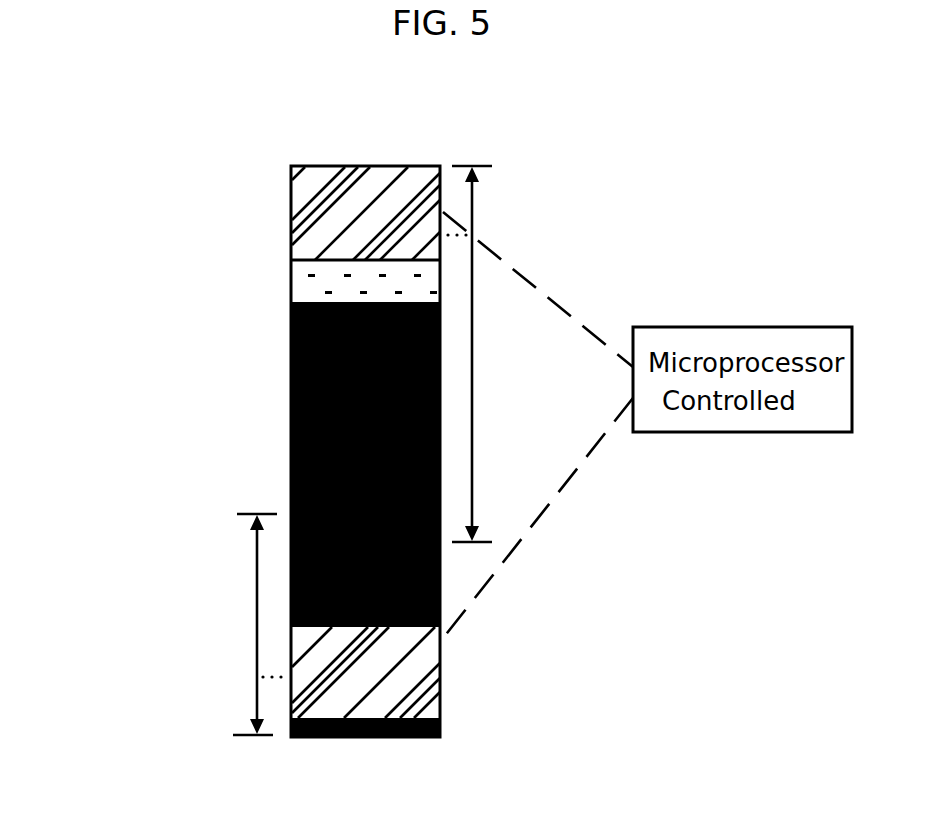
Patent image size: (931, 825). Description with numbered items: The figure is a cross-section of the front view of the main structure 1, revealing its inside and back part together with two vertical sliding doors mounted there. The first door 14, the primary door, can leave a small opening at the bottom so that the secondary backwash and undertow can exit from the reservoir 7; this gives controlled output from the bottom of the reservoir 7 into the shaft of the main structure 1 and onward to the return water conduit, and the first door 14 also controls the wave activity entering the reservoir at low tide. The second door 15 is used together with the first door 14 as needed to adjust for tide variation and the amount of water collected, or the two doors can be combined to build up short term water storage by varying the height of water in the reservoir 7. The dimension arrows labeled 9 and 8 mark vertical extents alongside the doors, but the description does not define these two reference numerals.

The second door 15 is at (272, 218).
The main structure 1 is at (272, 285).
The reservoir 7 is at (278, 490).
The first door 14 is at (456, 672).
The lower segment length 9 is at (222, 513).
The upper segment length 8 is at (448, 628).